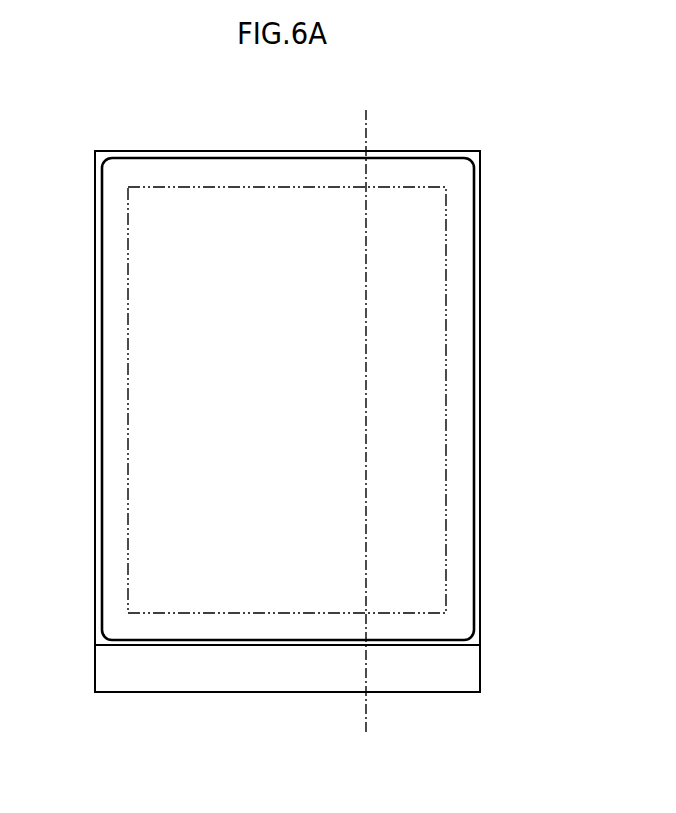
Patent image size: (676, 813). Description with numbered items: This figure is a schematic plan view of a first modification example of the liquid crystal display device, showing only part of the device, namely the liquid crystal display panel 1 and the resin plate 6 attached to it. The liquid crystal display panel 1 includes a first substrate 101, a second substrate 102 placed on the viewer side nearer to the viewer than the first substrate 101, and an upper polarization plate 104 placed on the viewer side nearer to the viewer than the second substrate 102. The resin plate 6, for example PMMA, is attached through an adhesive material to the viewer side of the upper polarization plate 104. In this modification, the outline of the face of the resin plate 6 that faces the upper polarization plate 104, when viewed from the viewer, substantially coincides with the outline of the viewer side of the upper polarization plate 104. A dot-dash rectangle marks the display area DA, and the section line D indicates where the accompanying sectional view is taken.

The liquid crystal display panel 1 is at (287, 150).
The resin plate 6 is at (168, 230).
The display area DA is at (413, 186).
The line D-D' D is at (368, 425).
The first substrate 101 is at (427, 670).
The second substrate 102 is at (160, 648).
The upper polarization plate 104 is at (258, 644).